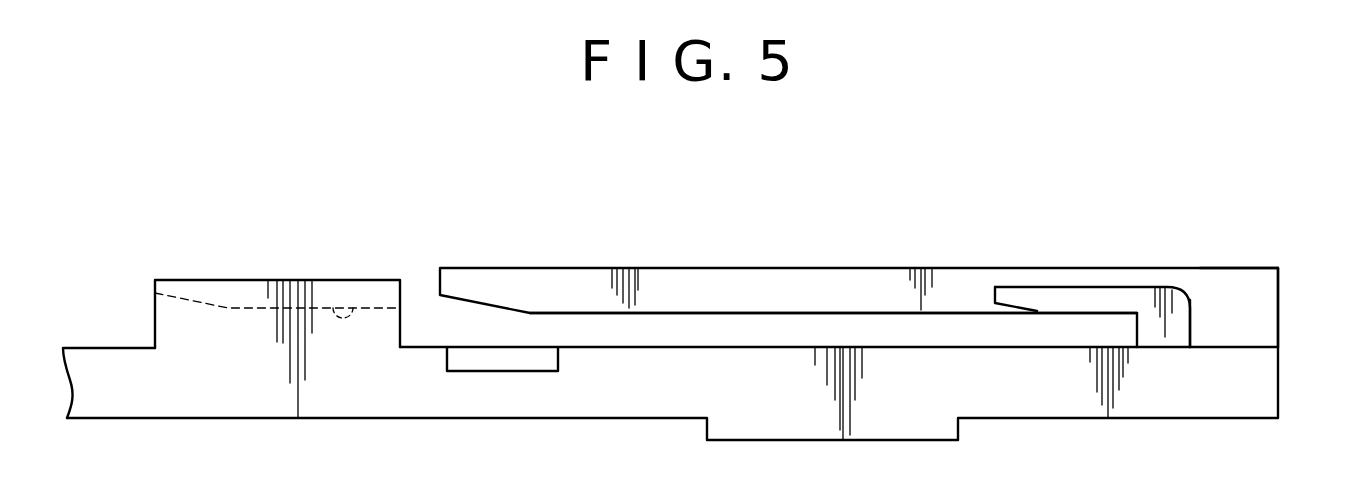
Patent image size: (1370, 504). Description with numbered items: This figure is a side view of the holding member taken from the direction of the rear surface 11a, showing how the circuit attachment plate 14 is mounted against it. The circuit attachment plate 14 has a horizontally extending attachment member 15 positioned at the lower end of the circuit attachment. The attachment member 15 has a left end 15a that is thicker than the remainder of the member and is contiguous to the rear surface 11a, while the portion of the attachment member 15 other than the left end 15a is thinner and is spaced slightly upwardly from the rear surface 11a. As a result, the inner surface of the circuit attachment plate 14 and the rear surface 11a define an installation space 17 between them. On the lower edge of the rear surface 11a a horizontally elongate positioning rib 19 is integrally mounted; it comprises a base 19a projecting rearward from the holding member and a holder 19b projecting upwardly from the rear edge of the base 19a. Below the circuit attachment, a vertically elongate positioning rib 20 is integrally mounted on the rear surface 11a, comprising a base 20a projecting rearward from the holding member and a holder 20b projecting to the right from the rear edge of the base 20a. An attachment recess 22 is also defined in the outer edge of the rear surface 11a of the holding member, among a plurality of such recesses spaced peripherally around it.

The rear surface 11a is at (110, 348).
The positioning rib 19 is at (290, 280).
The base 19a is at (227, 337).
The holder 19b is at (352, 300).
The attachment recess 22 is at (497, 363).
The circuit attachment plate 14 is at (818, 268).
The attachment member 15 is at (920, 268).
The left end 15a is at (1243, 268).
The installation space 17 is at (820, 340).
The positioning rib 20 is at (1095, 295).
The holder 20b is at (1045, 295).
The base 20a is at (1175, 325).